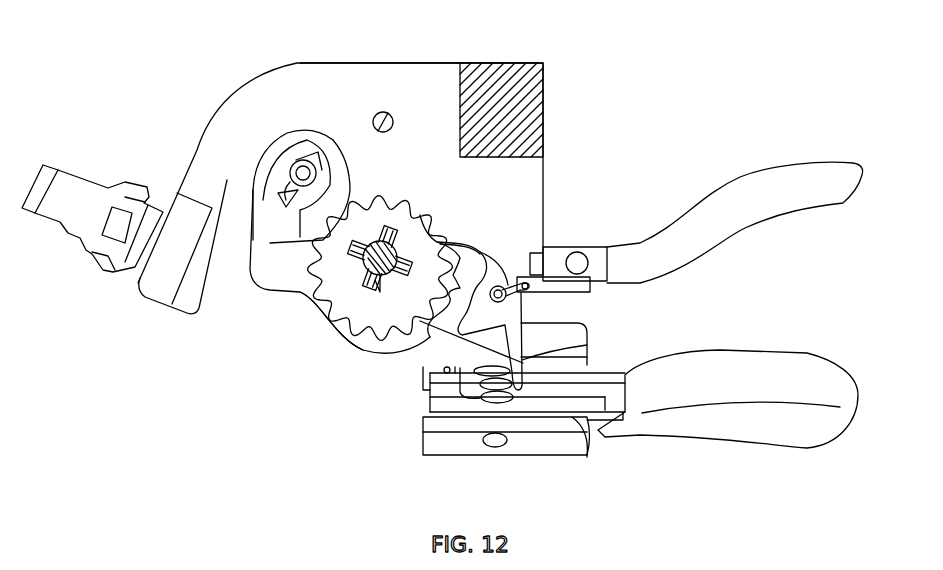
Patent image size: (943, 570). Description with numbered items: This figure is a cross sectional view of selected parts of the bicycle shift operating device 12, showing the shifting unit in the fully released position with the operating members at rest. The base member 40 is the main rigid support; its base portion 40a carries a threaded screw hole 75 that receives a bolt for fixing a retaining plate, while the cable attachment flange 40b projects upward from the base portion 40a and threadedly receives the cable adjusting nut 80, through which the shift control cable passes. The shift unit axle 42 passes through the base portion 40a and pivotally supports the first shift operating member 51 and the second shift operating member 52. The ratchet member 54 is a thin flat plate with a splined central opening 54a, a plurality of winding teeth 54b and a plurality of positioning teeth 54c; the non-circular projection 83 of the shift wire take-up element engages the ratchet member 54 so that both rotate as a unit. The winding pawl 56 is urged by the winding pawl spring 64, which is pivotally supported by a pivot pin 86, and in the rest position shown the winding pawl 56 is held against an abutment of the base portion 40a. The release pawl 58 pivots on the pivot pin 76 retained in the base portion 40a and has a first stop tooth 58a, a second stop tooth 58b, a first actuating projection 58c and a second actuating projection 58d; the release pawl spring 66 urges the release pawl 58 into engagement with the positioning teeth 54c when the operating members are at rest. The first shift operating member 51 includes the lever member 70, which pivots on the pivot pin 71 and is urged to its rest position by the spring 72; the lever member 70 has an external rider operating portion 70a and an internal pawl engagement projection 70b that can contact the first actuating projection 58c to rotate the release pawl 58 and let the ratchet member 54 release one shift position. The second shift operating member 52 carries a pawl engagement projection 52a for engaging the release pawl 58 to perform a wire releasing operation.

The bicycle shift operating device 12 is at (240, 392).
The base member 40 is at (245, 83).
The base portion 40a is at (317, 87).
The cable attachment flange 40b is at (158, 273).
The shift unit axle 42 is at (373, 282).
The first shift operating member 51 is at (445, 460).
The second shift operating member 52 is at (762, 172).
The pawl engagement projection 52a is at (577, 252).
The ratchet member 54 is at (318, 288).
The splined central opening 54a is at (433, 240).
The winding teeth 54b is at (383, 202).
The positioning teeth 54c is at (352, 343).
The winding pawl 56 is at (265, 207).
The release pawl 58 is at (528, 313).
The first stop tooth 58a is at (475, 247).
The second stop tooth 58b is at (422, 389).
The first actuating projection 58c is at (587, 345).
The second actuating projection 58d is at (590, 290).
The winding pawl spring 64 is at (323, 147).
The release pawl spring 66 is at (510, 282).
The lever member 70 is at (792, 338).
The external rider operating portion 70a is at (739, 350).
The internal pawl engagement projection 70b is at (540, 383).
The pivot pin 71 is at (495, 447).
The spring 72 is at (513, 407).
The threaded screw hole 75 is at (385, 112).
The pivot pin 76 is at (498, 286).
The cable adjusting nut 80 is at (58, 232).
The non-circular projection 83 is at (395, 294).
The pivot pin 86 is at (300, 172).